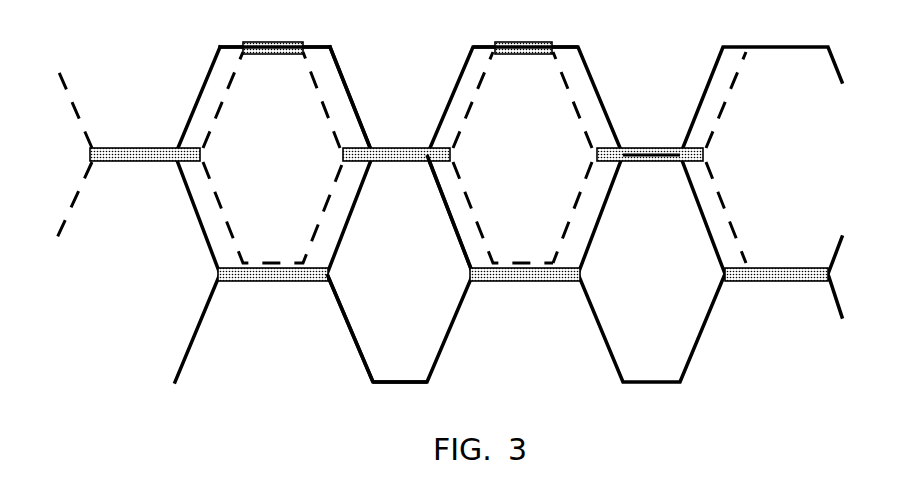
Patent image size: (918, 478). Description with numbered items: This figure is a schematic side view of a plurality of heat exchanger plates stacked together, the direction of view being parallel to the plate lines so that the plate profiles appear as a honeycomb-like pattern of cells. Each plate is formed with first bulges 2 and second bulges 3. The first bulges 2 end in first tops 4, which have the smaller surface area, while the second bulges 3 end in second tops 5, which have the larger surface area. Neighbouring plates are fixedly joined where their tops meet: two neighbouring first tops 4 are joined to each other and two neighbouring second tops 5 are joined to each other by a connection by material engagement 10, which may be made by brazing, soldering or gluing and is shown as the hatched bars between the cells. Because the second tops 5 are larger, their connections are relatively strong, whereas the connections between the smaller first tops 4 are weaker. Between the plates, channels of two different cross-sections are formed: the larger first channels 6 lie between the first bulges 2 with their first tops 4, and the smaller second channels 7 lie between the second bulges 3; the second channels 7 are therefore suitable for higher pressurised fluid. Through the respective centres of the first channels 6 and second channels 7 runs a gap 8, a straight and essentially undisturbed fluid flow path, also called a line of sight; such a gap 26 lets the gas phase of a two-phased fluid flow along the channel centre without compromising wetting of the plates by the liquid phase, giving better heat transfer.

The first bulge 2 is at (359, 134).
The second bulge 3 is at (466, 246).
The first top 4 is at (385, 148).
The second top 5 is at (514, 267).
The first channel 6 is at (516, 74).
The second channel 7 is at (345, 336).
The gap 8 is at (391, 260).
The connection by material engagement 10 is at (265, 273).
The gap 26 is at (587, 108).